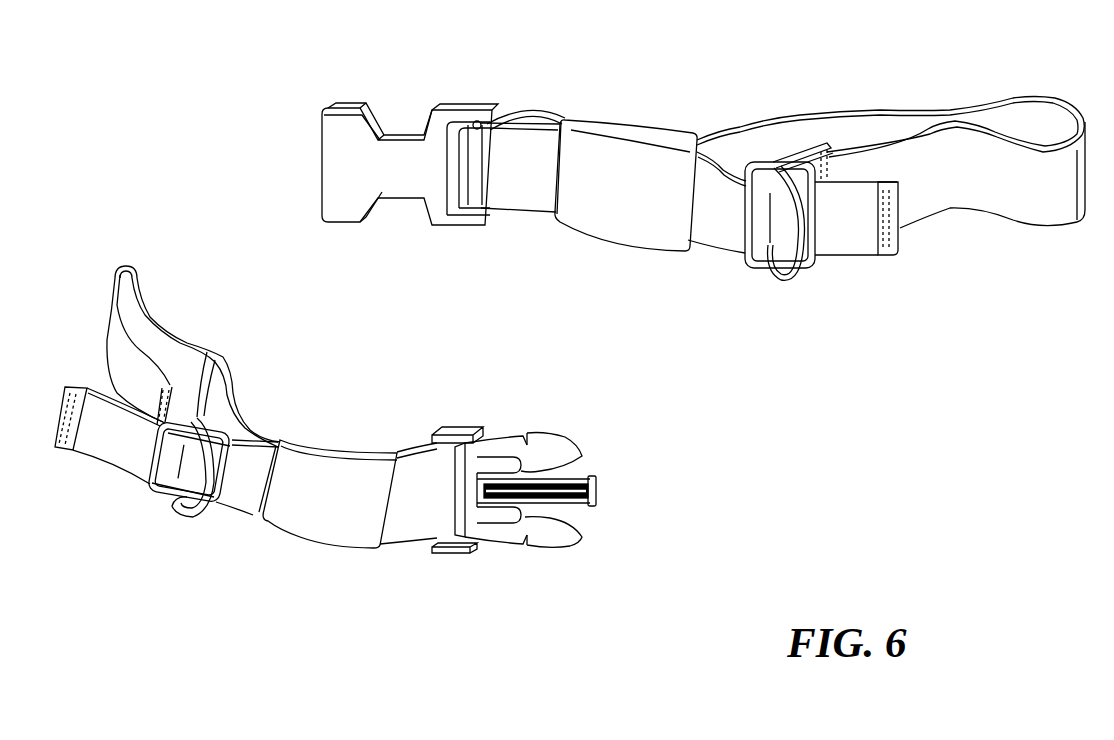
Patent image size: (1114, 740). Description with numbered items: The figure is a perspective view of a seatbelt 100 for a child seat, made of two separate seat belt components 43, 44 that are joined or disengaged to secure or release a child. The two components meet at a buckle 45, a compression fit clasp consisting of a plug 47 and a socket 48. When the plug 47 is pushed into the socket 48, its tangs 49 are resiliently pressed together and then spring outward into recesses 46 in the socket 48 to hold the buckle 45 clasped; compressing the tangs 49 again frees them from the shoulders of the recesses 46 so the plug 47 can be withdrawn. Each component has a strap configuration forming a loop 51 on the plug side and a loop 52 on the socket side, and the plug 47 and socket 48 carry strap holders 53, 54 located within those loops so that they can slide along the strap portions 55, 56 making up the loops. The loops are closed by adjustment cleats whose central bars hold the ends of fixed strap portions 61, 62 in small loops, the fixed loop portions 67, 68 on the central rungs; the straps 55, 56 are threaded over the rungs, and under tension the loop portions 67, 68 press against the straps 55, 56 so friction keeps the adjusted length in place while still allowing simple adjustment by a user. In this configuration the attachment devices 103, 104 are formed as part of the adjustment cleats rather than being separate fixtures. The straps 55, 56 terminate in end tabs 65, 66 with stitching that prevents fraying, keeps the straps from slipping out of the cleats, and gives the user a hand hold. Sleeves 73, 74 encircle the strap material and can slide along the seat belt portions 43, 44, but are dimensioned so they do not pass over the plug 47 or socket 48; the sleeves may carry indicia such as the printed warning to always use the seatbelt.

The seatbelt 100 is at (839, 464).
The seat belt component 44 is at (925, 68).
The seat belt component 43 is at (250, 570).
The recesses 46 is at (397, 127).
The socket 48 is at (454, 222).
The strap holder 54 is at (476, 121).
The strap portion 56 is at (706, 224).
The sleeve 74 is at (627, 158).
The loop 52 is at (737, 148).
The fixed loop portion 68 is at (790, 152).
The attachment device 103 is at (790, 270).
The end tab 66 is at (889, 250).
The fixed strap portion 62 is at (950, 198).
The end tab 65 is at (58, 450).
The strap portion 55 is at (113, 453).
The fixed loop portion 67 is at (210, 413).
The attachment device 104 is at (183, 517).
The fixed strap portion 61 is at (118, 346).
The loop 51 is at (194, 370).
The sleeve 73 is at (326, 515).
The buckle 45 is at (528, 562).
The strap holder 53 is at (440, 545).
The tangs 49 is at (560, 430).
The plug 47 is at (590, 447).